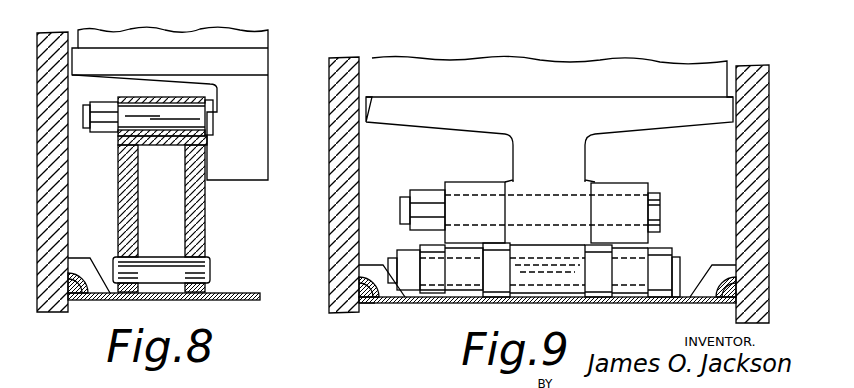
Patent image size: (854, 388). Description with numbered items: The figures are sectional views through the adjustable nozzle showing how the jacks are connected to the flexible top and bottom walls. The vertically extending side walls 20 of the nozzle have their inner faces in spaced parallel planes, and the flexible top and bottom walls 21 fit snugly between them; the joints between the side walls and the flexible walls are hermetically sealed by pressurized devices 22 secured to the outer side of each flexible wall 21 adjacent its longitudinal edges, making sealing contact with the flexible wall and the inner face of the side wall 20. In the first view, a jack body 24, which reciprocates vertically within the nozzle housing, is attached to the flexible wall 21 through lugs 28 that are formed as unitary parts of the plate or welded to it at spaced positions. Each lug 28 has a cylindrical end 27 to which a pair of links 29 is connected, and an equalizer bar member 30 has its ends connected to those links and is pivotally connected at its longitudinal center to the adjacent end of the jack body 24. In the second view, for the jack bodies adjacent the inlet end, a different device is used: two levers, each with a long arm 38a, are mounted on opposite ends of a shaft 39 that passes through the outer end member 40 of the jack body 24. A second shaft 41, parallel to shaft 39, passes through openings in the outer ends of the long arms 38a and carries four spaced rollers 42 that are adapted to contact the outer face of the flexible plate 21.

In FIG. 8, the side wall 20 is at (60, 190).
In FIG. 9, the side wall 20 is at (343, 60).
In FIG. 8, the flexible wall 21 is at (258, 300).
In FIG. 9, the flexible wall 21 is at (385, 305).
In FIG. 8, the pressurized device 22 is at (85, 272).
In FIG. 9, the pressurized device 22 is at (378, 268).
In FIG. 8, the jack body 24 is at (143, 38).
In FIG. 9, the jack body 24 is at (475, 68).
In FIG. 8, the cylindrical end 27 is at (200, 269).
In FIG. 8, the lug 28 is at (186, 272).
In FIG. 8, the link 29 is at (192, 206).
In FIG. 8, the equalizer bar member 30 is at (178, 143).
In FIG. 9, the long arm 38a is at (460, 240).
In FIG. 9, the shaft 39 is at (408, 202).
In FIG. 9, the outer end member 40 is at (585, 153).
In FIG. 9, the shaft 41 is at (553, 272).
In FIG. 9, the roller 42 is at (428, 296).